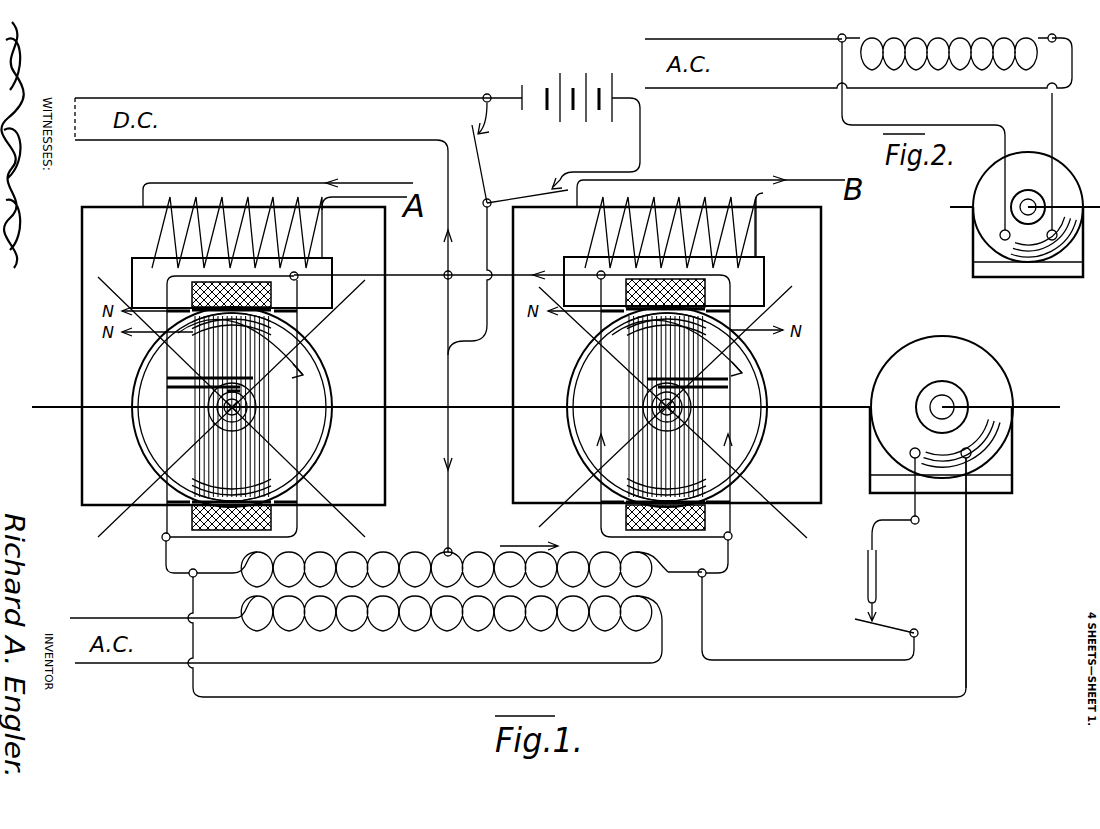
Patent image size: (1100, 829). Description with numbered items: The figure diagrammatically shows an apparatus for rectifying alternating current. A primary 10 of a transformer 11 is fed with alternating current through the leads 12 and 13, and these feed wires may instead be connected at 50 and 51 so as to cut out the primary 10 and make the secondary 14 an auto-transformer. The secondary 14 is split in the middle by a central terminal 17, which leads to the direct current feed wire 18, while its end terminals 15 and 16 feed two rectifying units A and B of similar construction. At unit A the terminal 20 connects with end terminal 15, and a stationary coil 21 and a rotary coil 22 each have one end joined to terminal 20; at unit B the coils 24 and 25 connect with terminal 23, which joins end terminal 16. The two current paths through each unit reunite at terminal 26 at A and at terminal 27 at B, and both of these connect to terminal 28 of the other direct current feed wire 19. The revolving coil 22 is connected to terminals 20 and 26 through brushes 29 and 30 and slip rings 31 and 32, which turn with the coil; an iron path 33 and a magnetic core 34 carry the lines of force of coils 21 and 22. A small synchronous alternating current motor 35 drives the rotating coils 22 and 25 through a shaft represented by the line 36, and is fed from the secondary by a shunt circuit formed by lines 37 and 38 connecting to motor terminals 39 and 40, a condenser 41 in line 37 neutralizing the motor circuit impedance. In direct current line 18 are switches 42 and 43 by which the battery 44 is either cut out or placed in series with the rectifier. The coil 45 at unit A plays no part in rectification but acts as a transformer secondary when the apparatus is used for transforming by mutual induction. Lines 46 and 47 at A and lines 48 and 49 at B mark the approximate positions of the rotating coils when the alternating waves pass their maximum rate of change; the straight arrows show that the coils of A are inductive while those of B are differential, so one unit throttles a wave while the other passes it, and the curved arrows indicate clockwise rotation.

In FIG. 1, the primary 10 is at (461, 627).
In FIG. 2, the primary 10 is at (965, 48).
In FIG. 1, the transformer 11 is at (679, 596).
In FIG. 1, the lead 12 is at (100, 667).
In FIG. 2, the lead 12 is at (667, 91).
In FIG. 1, the lead 13 is at (88, 617).
In FIG. 2, the lead 13 is at (653, 42).
In FIG. 1, the secondary 14 is at (382, 553).
In FIG. 1, the end terminal of the secondary 15 is at (212, 572).
In FIG. 1, the end terminal of the secondary 16 is at (677, 571).
In FIG. 1, the central terminal 17 is at (451, 551).
In FIG. 1, the direct current feed wire 18 is at (148, 98).
In FIG. 1, the direct current feed wire 19 is at (162, 140).
In FIG. 1, the terminal 20 is at (163, 540).
In FIG. 1, the stationary coil 21 is at (190, 514).
In FIG. 1, the rotary coil 22 is at (257, 470).
In FIG. 1, the terminal 23 is at (733, 540).
In FIG. 1, the coil 24 is at (707, 517).
In FIG. 1, the coil 25 is at (643, 473).
In FIG. 1, the terminal 26 is at (245, 403).
In FIG. 1, the terminal 27 is at (650, 401).
In FIG. 1, the terminal 28 is at (447, 289).
In FIG. 1, the brush 29 is at (198, 377).
In FIG. 1, the brush 30 is at (180, 388).
In FIG. 1, the slip ring 31 is at (253, 412).
In FIG. 1, the slip ring 32 is at (257, 397).
In FIG. 1, the iron path 33 is at (78, 432).
In FIG. 1, the magnetic core 34 is at (150, 390).
In FIG. 1, the synchronous alternating current motor 35 is at (997, 362).
In FIG. 2, the synchronous alternating current motor 35 is at (1075, 180).
In FIG. 1, the shaft 36 is at (40, 405).
In FIG. 2, the shaft 36 is at (955, 206).
In FIG. 1, the line 37 is at (706, 627).
In FIG. 1, the line 38 is at (190, 685).
In FIG. 1, the terminal of the motor 39 is at (910, 455).
In FIG. 1, the terminal of the motor 40 is at (972, 454).
In FIG. 1, the condenser 41 is at (866, 565).
In FIG. 1, the switch 42 is at (480, 161).
In FIG. 1, the switch 43 is at (507, 198).
In FIG. 1, the battery 44 is at (568, 122).
In FIG. 1, the coil 45 is at (248, 197).
In FIG. 1, the line 46 is at (357, 297).
In FIG. 1, the line 47 is at (103, 289).
In FIG. 1, the line 48 is at (766, 302).
In FIG. 1, the line 49 is at (778, 515).
In FIG. 1, the connection point 50 is at (190, 578).
In FIG. 1, the connection point 51 is at (703, 578).